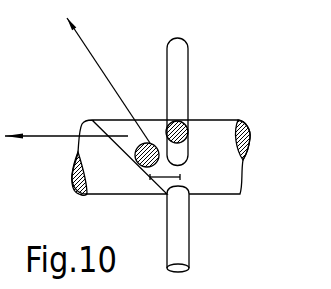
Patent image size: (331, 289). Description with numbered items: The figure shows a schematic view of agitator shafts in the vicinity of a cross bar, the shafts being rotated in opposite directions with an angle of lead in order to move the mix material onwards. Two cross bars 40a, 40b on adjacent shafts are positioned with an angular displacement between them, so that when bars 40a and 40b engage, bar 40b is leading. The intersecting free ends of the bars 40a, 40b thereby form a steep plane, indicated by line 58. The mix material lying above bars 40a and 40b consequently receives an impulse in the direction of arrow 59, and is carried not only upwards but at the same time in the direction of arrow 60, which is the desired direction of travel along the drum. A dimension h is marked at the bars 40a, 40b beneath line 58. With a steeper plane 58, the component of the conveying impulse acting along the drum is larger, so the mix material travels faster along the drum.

The line 58 is at (206, 85).
The bar 40a is at (147, 143).
The bar 40b is at (110, 170).
The arrow 59 is at (115, 84).
The direction of movement arrow 60 is at (58, 139).
The distance h is at (163, 178).